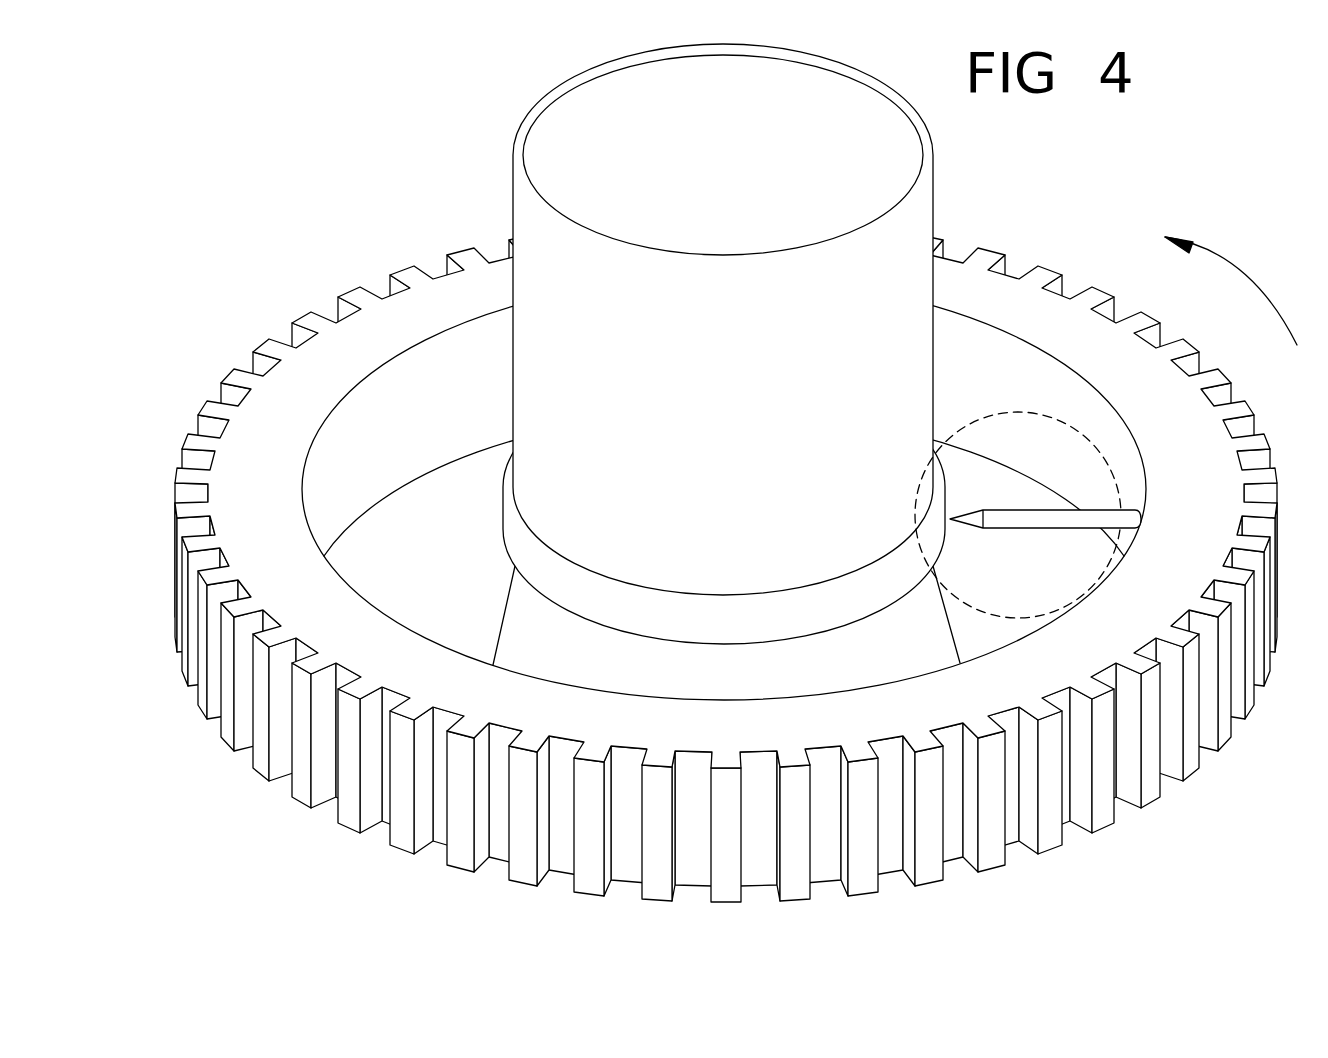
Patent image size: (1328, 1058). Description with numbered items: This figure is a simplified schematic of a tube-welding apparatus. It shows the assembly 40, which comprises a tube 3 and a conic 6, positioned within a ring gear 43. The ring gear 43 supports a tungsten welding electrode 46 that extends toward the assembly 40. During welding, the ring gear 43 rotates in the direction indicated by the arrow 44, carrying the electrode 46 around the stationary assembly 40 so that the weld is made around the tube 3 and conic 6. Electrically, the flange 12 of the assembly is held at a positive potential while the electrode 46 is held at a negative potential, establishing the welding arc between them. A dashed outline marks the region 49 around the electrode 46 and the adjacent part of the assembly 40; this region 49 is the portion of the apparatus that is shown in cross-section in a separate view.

The tube 3 is at (732, 403).
The conic 6 is at (550, 650).
The flange 12 is at (503, 520).
The assembly 40 is at (726, 473).
The ring gear 43 is at (304, 365).
The arrow 44 is at (1262, 290).
The tungsten welding electrode 46 is at (1007, 508).
The region 49 is at (1047, 417).